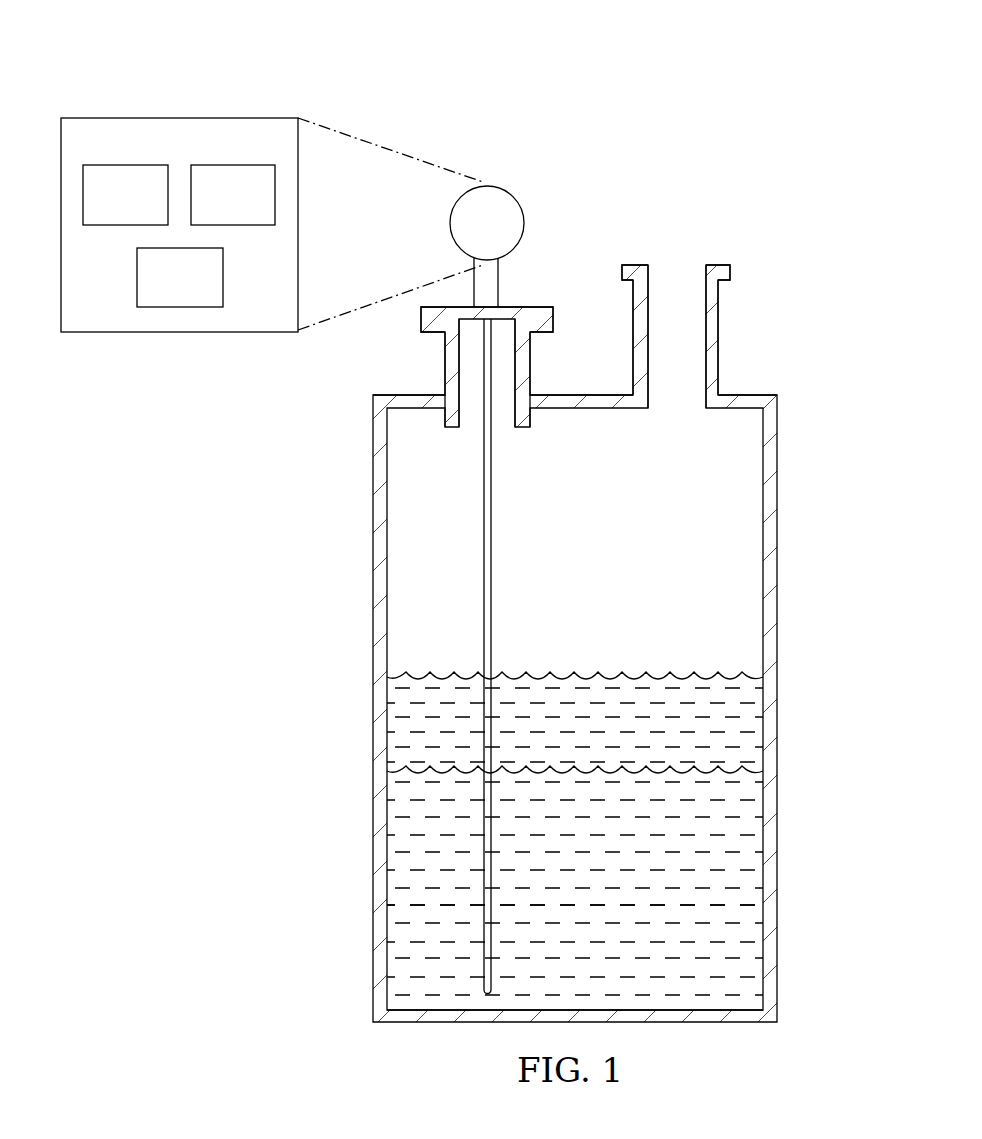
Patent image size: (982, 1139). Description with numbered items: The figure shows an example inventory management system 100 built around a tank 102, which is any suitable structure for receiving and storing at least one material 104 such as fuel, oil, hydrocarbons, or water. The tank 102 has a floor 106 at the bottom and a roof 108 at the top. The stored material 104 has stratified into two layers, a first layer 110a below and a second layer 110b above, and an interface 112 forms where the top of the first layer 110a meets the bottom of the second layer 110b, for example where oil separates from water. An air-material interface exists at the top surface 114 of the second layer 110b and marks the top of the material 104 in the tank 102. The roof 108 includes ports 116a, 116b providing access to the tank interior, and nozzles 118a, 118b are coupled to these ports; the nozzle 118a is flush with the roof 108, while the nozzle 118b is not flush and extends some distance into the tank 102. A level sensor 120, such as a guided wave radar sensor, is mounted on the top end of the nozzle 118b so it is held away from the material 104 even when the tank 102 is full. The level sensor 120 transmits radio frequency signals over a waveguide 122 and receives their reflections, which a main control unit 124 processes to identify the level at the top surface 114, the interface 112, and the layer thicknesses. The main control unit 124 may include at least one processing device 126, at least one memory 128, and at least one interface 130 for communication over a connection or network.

The inventory management system 100 is at (635, 68).
The tank 102 is at (778, 463).
The material 104 is at (755, 861).
The floor 106 is at (741, 1002).
The roof 108 is at (583, 412).
The first layer 110a is at (757, 898).
The second layer 110b is at (757, 695).
The interface 112 is at (729, 768).
The top surface 114 is at (611, 678).
The port 116a is at (684, 390).
The port 116b is at (473, 394).
The nozzle 118a is at (722, 332).
The nozzle 118b is at (533, 375).
The level sensor 120 is at (512, 182).
The waveguide 122 is at (494, 542).
The main control unit 124 is at (164, 113).
The processing device 126 is at (104, 208).
The memory 128 is at (212, 208).
The interface 130 is at (159, 291).